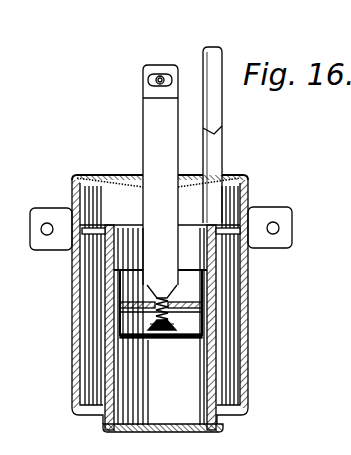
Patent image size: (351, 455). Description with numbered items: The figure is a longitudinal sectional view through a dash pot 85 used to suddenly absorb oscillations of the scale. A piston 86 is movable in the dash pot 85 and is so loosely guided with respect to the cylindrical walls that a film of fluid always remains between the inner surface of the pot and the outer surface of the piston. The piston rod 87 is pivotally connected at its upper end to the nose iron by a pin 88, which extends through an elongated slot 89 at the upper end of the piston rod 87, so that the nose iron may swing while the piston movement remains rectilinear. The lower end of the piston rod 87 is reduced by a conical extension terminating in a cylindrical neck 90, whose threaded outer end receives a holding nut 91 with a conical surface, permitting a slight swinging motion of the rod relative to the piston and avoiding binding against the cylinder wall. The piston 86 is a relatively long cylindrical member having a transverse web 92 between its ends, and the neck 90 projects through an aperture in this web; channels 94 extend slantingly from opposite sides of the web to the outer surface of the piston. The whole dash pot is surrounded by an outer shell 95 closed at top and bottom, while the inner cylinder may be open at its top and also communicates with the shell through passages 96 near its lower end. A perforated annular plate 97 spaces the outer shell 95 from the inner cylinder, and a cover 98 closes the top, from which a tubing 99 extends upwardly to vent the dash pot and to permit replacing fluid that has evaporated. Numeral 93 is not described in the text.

The dash pot 85 is at (216, 336).
The piston 86 is at (191, 339).
The piston rod 87 is at (143, 133).
The pin 88 is at (148, 80).
The elongated slot 89 is at (173, 72).
The cylindrical neck 90 is at (115, 300).
The holding nut 91 is at (118, 318).
The transverse web 92 is at (112, 287).
The chamber top 93 is at (216, 278).
The channels 94 is at (118, 306).
The outer shell 95 is at (75, 363).
The passages 96 is at (74, 409).
The perforated annular plate 97 is at (72, 208).
The cover 98 is at (80, 176).
The tubing 99 is at (223, 157).